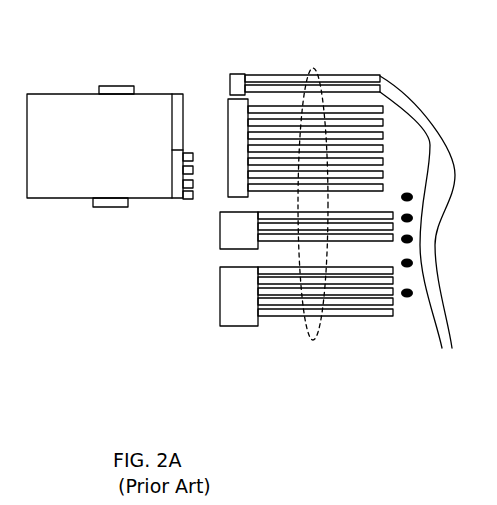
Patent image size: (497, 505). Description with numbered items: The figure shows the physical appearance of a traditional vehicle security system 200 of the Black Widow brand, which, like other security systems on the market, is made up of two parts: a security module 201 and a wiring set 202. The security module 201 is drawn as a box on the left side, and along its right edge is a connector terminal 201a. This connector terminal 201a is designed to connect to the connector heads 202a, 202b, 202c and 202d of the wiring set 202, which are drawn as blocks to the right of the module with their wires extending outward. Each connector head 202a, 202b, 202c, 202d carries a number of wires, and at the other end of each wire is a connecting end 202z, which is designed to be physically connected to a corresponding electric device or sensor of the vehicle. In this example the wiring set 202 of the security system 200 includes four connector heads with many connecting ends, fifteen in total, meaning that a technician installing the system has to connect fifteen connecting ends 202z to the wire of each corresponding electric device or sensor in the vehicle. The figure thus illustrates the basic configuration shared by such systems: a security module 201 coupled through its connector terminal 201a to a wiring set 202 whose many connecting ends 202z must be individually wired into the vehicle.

The security system 200 is at (157, 430).
The security module 201 is at (61, 198).
The connector terminal 201a is at (173, 197).
The wiring set 202 is at (312, 338).
The connector head 202a is at (243, 322).
The connector head 202b is at (240, 82).
The connector head 202c is at (228, 157).
The connector head 202d is at (232, 233).
The connecting end 202z is at (372, 324).